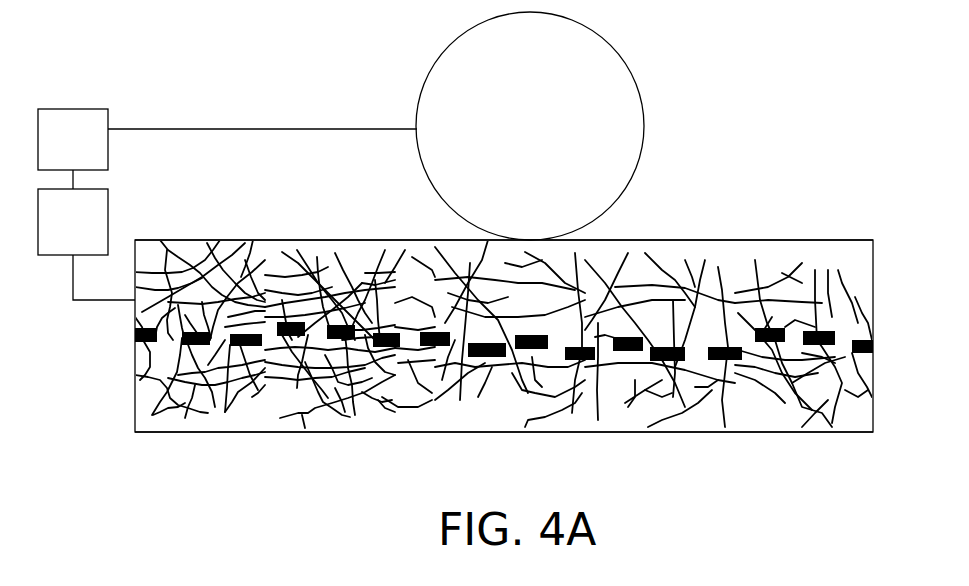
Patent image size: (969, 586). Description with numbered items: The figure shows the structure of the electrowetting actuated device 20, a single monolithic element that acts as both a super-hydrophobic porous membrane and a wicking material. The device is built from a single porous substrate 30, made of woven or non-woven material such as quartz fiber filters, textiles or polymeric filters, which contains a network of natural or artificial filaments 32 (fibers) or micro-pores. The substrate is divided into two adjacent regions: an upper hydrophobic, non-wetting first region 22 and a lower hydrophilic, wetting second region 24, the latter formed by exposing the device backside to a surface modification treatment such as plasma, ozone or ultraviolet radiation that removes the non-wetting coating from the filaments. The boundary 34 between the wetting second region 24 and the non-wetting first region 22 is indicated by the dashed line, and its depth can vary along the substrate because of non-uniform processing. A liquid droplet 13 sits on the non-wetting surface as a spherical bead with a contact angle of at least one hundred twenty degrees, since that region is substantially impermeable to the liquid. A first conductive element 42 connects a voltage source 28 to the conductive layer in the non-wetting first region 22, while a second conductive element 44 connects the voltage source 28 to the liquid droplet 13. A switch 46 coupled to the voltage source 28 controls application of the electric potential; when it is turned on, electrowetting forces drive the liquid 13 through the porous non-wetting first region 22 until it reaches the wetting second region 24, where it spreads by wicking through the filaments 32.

The liquid droplet 13 is at (598, 62).
The electrowetting actuated device 20 is at (766, 109).
The non-wetting first region 22 is at (780, 255).
The wetting second region 24 is at (830, 432).
The voltage source 28 is at (73, 212).
The porous substrate 30 is at (672, 240).
The filaments 32 is at (305, 257).
The boundary 34 is at (137, 354).
The first conductive element 42 is at (73, 300).
The second conductive element 44 is at (217, 128).
The switch 46 is at (73, 139).